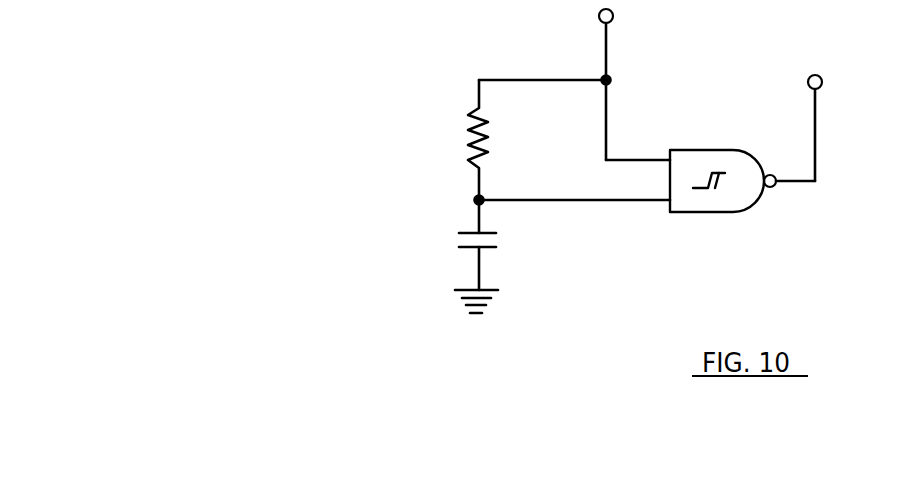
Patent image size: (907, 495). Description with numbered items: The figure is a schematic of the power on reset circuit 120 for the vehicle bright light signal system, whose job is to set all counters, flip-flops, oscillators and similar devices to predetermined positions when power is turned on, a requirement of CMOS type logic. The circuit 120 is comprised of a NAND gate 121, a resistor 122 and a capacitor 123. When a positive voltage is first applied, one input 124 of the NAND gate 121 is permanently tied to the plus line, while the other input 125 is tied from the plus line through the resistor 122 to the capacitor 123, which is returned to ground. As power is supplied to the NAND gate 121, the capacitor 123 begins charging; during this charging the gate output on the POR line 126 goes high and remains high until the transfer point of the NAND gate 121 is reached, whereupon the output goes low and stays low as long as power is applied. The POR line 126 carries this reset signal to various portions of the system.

The power on reset circuit 120 is at (360, 272).
The NAND gate 121 is at (723, 201).
The resistor 122 is at (473, 135).
The capacitor 123 is at (509, 245).
The input 124 is at (658, 147).
The input 125 is at (636, 203).
The POR line 126 is at (817, 128).